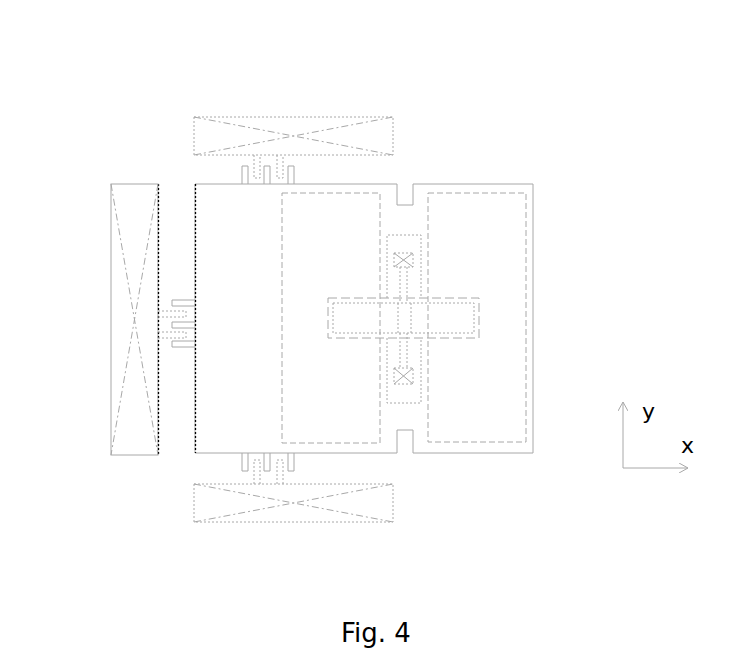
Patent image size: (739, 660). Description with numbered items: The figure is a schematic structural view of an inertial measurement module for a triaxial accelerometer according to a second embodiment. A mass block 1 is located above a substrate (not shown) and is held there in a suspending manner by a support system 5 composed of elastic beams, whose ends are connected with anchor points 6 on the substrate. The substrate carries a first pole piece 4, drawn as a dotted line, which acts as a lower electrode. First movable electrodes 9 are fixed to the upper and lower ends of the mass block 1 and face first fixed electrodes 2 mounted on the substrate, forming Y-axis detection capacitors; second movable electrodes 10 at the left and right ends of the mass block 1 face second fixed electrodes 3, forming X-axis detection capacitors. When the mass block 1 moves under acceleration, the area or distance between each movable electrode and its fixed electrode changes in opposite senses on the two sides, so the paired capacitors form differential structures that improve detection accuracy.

The mass block 1 is at (229, 394).
The first fixed electrode 2 is at (293, 116).
The second fixed electrode 3 is at (111, 248).
The first pole piece 4 is at (336, 208).
The support system 5 is at (405, 336).
The anchor point 6 is at (406, 386).
The first movable electrode 9 is at (247, 178).
The second movable electrode 10 is at (177, 299).